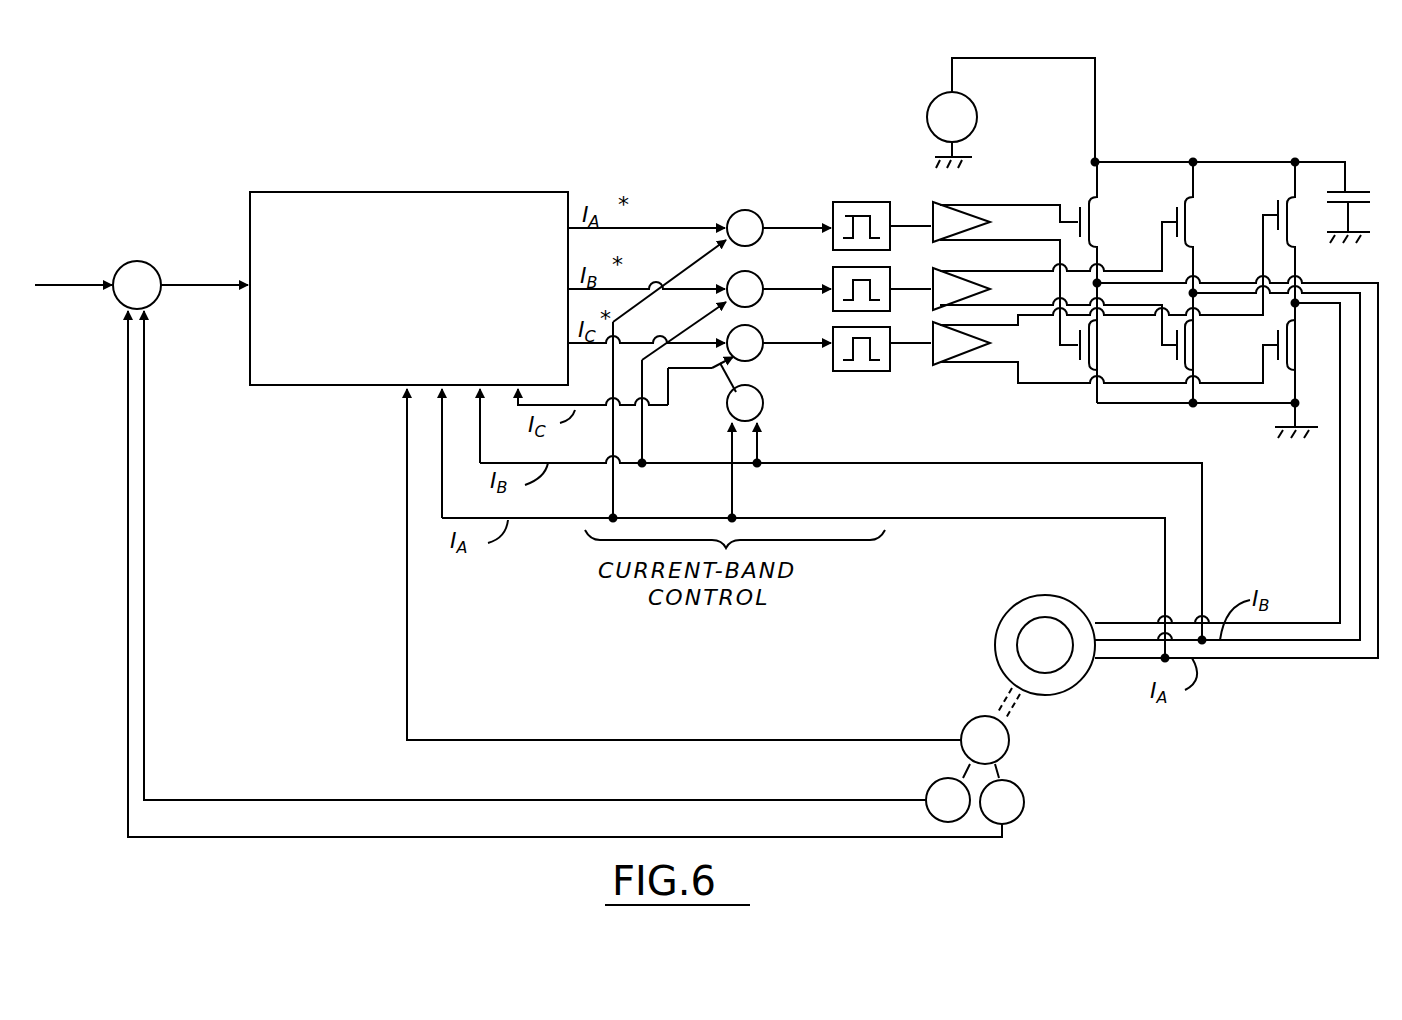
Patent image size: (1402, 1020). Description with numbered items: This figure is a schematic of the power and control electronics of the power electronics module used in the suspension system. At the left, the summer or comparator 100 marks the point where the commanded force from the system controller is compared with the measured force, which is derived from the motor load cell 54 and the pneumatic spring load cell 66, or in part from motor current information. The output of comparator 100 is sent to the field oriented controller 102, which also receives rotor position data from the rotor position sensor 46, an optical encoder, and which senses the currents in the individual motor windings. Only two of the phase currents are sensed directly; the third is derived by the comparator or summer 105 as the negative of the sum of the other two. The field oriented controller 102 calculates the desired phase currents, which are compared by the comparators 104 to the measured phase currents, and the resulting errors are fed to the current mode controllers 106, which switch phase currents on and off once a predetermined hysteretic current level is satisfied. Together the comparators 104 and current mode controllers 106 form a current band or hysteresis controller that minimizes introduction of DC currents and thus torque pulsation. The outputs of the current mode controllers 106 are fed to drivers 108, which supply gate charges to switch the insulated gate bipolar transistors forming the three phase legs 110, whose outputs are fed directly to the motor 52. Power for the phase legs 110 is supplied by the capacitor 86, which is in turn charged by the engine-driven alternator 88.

The summer or comparator 100 is at (137, 260).
The field oriented controller 102 is at (375, 192).
The comparators 104 is at (760, 328).
The comparator or summer 105 is at (760, 440).
The current mode controllers 106 is at (833, 350).
The drivers 108 is at (983, 347).
The phase legs 110 is at (1293, 255).
The alternator 88 is at (977, 113).
The capacitor 86 is at (1355, 188).
The motor 52 is at (1060, 627).
The rotor position sensor 46 is at (738, 583).
The motor load cell 54 is at (932, 782).
The pneumatic spring load cell 66 is at (1024, 800).